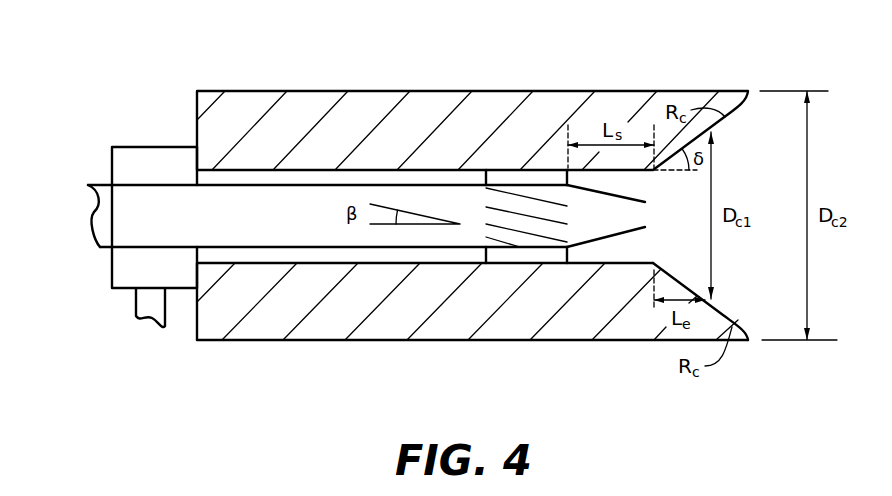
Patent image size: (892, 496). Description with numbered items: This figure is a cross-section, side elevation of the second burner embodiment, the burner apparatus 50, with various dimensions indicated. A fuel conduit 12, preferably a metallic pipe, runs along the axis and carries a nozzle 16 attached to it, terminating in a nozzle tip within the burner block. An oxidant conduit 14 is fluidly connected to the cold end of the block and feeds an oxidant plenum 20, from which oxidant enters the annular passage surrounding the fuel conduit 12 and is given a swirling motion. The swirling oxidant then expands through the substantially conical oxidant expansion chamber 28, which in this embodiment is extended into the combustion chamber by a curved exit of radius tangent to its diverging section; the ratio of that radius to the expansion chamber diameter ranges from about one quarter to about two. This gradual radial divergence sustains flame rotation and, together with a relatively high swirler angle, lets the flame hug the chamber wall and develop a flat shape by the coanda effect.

The fuel conduit 12 is at (100, 248).
The oxidant conduit 14 is at (134, 304).
The nozzle 16 is at (607, 240).
The oxidant plenum 20 is at (127, 146).
The substantially conical oxidant expansion chamber 28 is at (659, 268).
The burner apparatus 50 is at (480, 192).